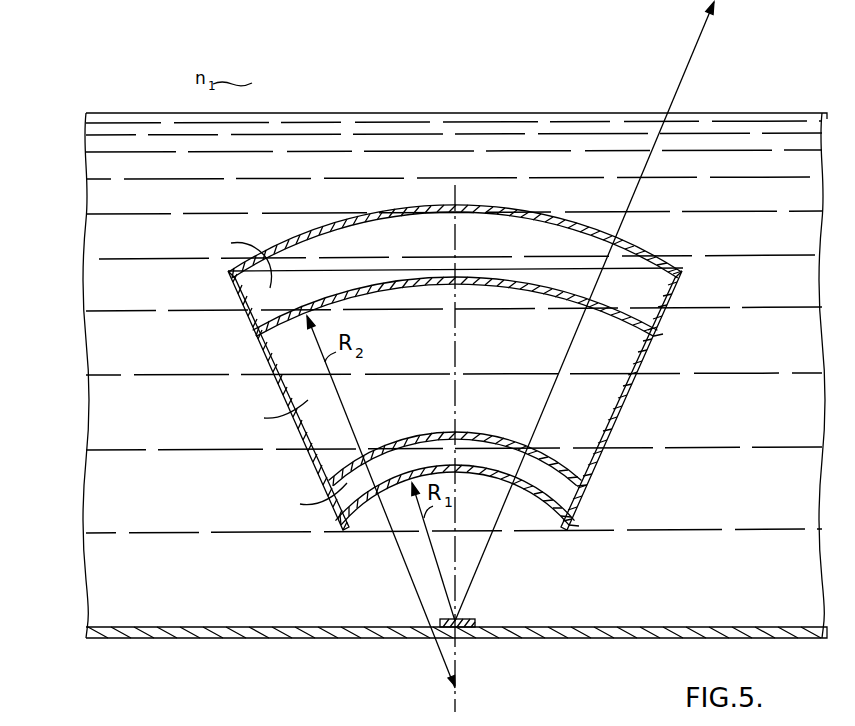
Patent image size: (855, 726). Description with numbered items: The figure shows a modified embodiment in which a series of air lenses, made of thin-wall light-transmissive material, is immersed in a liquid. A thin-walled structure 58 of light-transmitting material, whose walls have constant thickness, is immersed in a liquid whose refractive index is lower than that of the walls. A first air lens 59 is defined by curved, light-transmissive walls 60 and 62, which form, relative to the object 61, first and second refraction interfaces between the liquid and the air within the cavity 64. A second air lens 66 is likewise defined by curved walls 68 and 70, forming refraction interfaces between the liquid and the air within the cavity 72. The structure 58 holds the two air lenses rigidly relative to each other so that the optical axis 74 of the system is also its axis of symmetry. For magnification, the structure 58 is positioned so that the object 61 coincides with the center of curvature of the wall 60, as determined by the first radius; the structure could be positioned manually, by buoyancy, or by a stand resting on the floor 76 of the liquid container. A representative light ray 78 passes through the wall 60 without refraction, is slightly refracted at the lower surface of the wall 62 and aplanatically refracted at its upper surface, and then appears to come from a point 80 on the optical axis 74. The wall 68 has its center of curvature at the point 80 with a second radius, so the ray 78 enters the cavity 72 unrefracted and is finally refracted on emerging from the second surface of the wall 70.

The thin-walled structure 58 is at (677, 284).
The first air lens 59 is at (572, 487).
The curved light-transmissive wall 60 is at (522, 488).
The object 61 is at (478, 620).
The curved light-transmissive wall 62 is at (522, 433).
The cavity 64 is at (420, 452).
The second air lens 66 is at (647, 311).
The curved light-transmissive wall 68 is at (512, 291).
The curved light-transmissive wall 70 is at (520, 208).
The cavity 72 is at (397, 236).
The optical axis 74 is at (453, 692).
The floor 76 is at (586, 638).
The light ray 78 is at (694, 51).
The point 80 is at (460, 686).